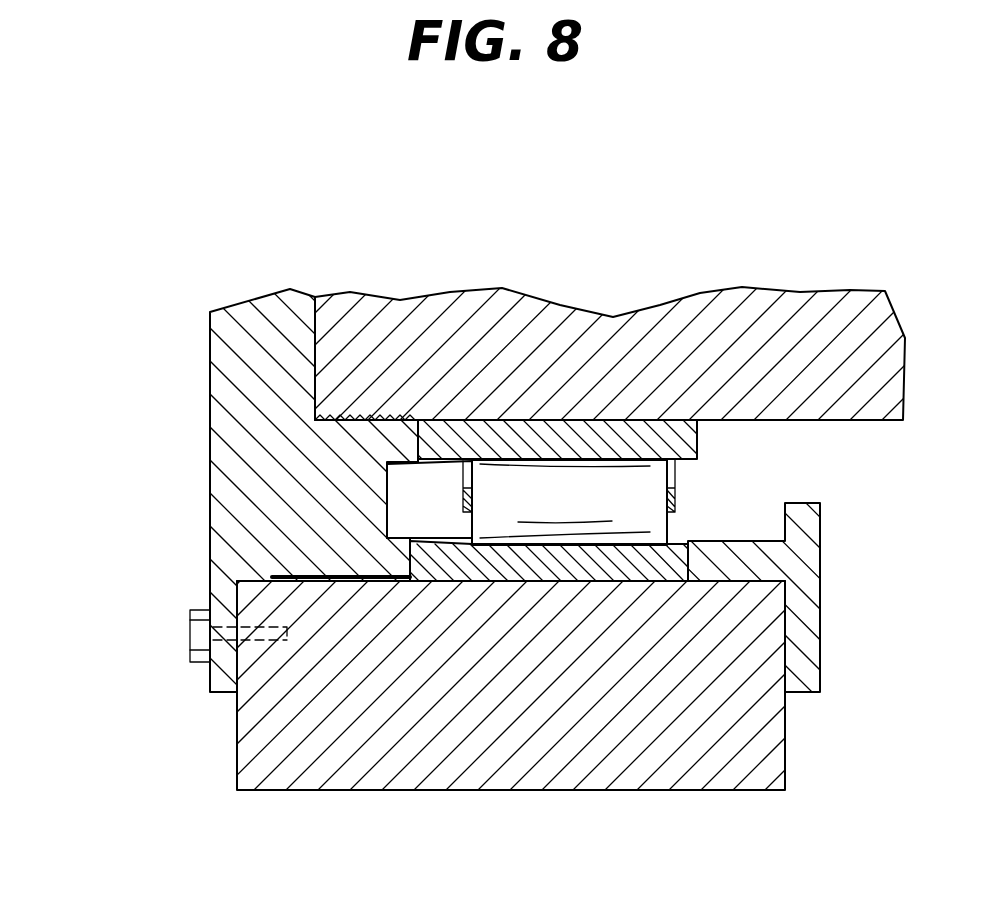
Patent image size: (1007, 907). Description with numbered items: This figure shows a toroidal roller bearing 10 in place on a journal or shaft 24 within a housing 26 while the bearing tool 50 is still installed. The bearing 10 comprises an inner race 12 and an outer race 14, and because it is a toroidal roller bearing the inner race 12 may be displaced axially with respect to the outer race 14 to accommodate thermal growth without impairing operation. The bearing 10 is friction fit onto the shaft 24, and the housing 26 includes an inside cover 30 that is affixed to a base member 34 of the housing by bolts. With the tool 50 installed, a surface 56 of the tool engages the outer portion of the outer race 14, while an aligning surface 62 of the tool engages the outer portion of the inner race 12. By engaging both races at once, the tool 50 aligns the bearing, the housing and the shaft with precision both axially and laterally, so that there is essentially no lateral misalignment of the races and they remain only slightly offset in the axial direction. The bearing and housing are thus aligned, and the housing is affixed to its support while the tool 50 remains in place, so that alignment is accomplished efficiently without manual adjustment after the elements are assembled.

The bearing 10 is at (730, 490).
The inner race 12 is at (687, 443).
The outer race 14 is at (673, 568).
The shaft 24 is at (697, 338).
The housing 26 is at (195, 750).
The inside cover 30 is at (823, 597).
The base member 34 is at (645, 763).
The tool 50 is at (243, 444).
The surface 56 is at (420, 552).
The aligning surface 62 is at (420, 448).